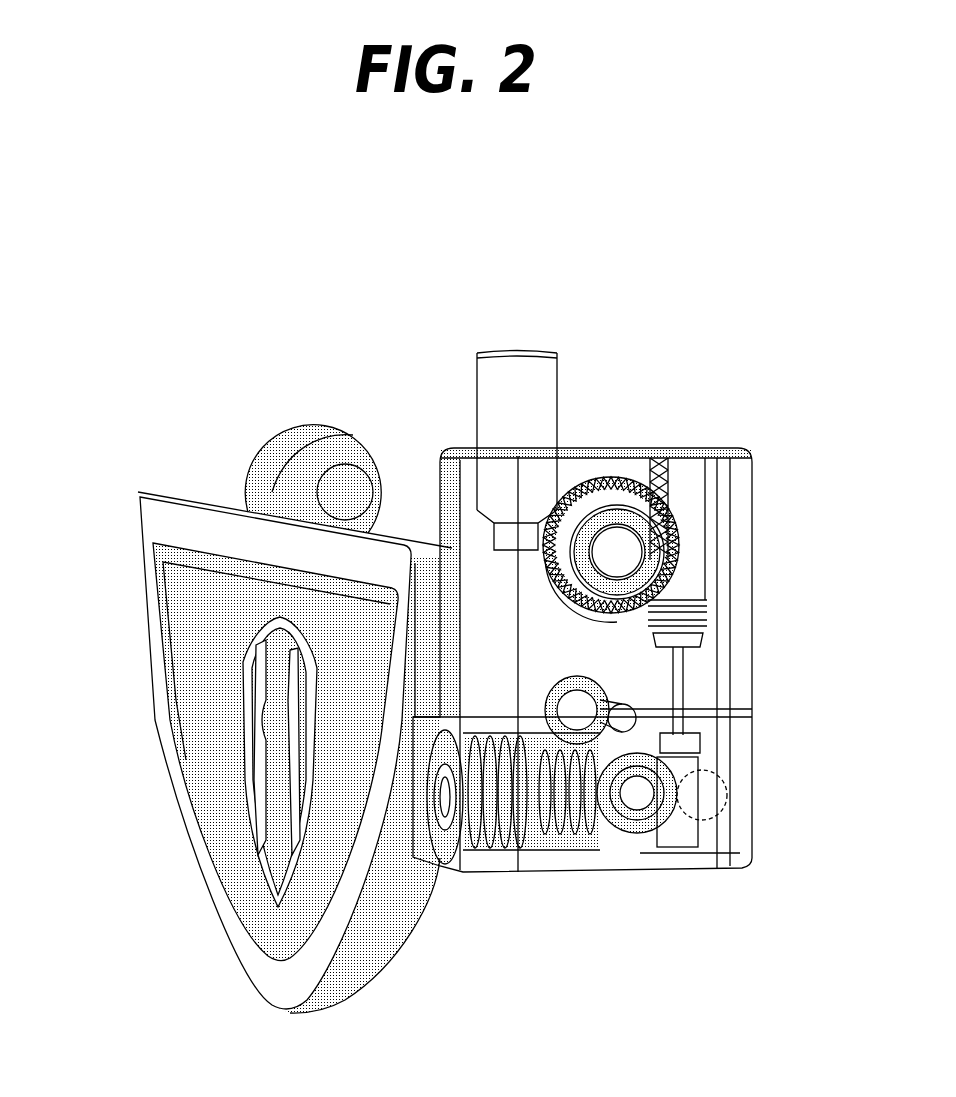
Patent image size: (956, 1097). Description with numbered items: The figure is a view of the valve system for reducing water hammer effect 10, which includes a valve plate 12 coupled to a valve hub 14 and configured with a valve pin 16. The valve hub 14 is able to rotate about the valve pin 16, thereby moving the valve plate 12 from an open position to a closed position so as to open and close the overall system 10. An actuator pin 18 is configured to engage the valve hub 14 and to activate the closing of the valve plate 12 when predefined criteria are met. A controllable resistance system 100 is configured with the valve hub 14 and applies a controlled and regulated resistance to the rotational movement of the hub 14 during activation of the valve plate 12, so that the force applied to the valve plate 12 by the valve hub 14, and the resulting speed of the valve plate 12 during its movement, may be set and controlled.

The valve system and method for reducing water hammer effect 10 is at (648, 203).
The valve plate 12 is at (148, 702).
The valve hub 14 is at (593, 470).
The valve pin 16 is at (617, 552).
The actuator pin 18 is at (477, 395).
The controllable resistance system 100 is at (710, 372).